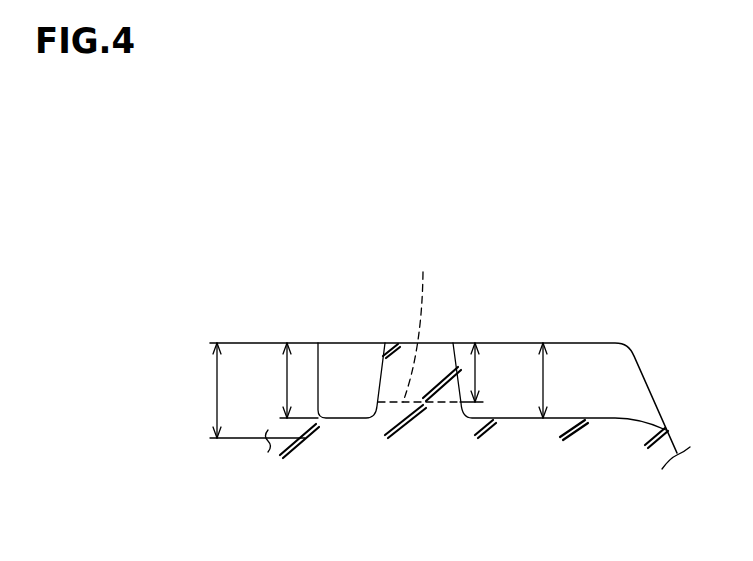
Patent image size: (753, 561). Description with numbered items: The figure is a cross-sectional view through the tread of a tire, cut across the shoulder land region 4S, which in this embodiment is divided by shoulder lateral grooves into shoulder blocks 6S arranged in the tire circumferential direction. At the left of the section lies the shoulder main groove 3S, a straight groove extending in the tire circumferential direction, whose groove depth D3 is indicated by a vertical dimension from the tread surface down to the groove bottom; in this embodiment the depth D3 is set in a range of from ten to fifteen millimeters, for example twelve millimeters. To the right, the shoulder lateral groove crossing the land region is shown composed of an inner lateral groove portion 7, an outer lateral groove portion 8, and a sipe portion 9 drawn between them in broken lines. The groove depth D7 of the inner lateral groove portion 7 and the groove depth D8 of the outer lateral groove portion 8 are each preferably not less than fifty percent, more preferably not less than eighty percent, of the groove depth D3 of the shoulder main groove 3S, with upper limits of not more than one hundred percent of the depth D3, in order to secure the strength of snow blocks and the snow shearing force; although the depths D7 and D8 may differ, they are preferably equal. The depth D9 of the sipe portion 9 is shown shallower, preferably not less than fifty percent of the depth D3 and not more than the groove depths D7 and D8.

The shoulder land region 4S is at (450, 322).
The shoulder block 6S is at (543, 297).
The shoulder main groove 3S is at (283, 440).
The inner lateral groove portion 7 is at (349, 340).
The outer lateral groove portion 8 is at (508, 340).
The sipe portion 9 is at (420, 321).
The groove depth of the shoulder main groove D3 is at (194, 390).
The groove depth of the inner lateral groove portion D7 is at (278, 380).
The groove depth of the outer lateral groove portion D8 is at (545, 380).
The depth of the sipe portion D9 is at (478, 372).